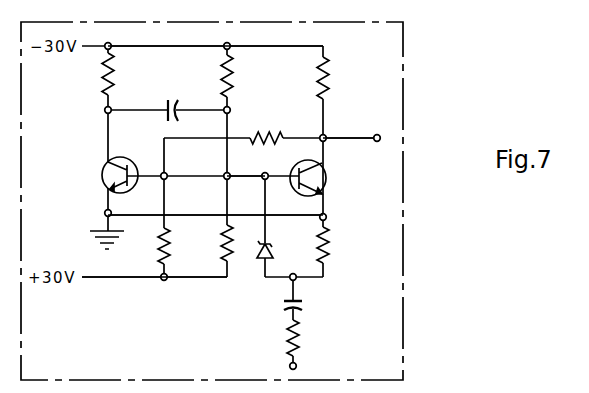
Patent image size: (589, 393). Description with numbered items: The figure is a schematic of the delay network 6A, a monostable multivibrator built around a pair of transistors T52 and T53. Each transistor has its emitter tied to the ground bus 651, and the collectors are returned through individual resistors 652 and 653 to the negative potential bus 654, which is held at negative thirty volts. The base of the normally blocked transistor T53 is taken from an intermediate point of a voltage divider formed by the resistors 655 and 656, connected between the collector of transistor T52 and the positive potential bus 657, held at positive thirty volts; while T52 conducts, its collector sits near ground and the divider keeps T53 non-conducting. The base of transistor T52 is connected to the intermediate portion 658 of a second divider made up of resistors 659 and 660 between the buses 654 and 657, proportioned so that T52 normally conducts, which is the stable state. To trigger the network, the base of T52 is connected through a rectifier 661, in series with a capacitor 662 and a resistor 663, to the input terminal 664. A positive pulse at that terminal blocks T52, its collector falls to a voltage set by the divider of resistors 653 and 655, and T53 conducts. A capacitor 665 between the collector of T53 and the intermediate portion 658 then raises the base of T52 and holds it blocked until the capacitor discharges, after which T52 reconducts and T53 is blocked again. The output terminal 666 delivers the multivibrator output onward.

The delay network 6A is at (407, 62).
The ground bus 651 is at (208, 212).
The resistor 652 is at (114, 82).
The resistor 653 is at (332, 81).
The negative potential bus 654 is at (212, 47).
The resistor 655 is at (253, 131).
The resistor 656 is at (158, 243).
The positive potential bus 657 is at (183, 280).
The intermediate portion 658 is at (224, 176).
The resistor 659 is at (235, 81).
The resistor 660 is at (215, 252).
The rectifier 661 is at (271, 253).
The capacitor 662 is at (282, 310).
The resistor 663 is at (284, 340).
The input terminal 664 is at (288, 365).
The capacitor 665 is at (162, 101).
The output terminal 666 is at (374, 135).
The transistor T52 is at (292, 167).
The transistor T53 is at (140, 158).